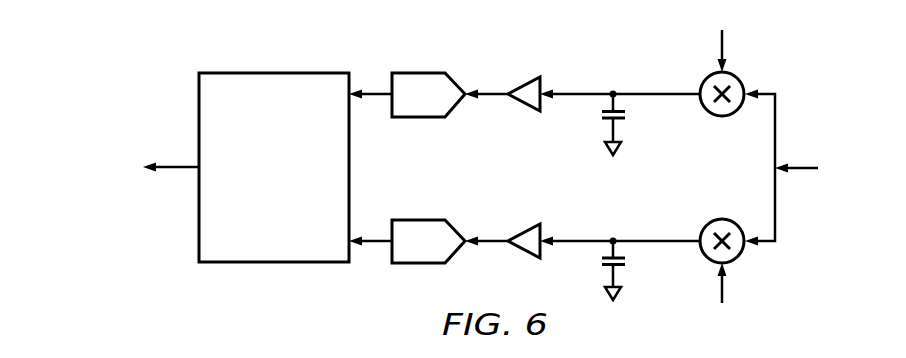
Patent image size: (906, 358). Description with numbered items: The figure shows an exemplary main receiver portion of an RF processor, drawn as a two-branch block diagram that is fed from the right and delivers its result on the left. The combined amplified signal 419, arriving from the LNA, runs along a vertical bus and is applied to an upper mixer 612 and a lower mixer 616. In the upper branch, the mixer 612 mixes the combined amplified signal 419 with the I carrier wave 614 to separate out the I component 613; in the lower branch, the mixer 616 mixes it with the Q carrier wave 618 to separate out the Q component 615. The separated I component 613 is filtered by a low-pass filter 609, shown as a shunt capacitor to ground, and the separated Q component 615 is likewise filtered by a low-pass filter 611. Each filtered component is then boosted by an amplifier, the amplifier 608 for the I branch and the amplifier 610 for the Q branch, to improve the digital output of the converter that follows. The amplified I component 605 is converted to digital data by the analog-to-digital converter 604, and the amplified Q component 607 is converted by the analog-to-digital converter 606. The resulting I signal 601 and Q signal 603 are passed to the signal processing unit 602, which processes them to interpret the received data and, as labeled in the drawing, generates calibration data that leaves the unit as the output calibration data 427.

The signal processing unit 602 is at (276, 72).
The output calibration data 427 is at (183, 170).
The I signal 601 is at (378, 92).
The Q signal 603 is at (378, 244).
The analog-to-digital converter 604 is at (423, 73).
The analog-to-digital converter 606 is at (420, 220).
The amplified I component 605 is at (487, 96).
The amplified Q component 607 is at (490, 238).
The amplifier 608 is at (520, 84).
The amplifier 610 is at (520, 250).
The I component 613 is at (580, 96).
The Q component 615 is at (580, 238).
The low-pass filter 609 is at (630, 115).
The low-pass filter 611 is at (630, 262).
The mixer 612 is at (706, 78).
The mixer 616 is at (706, 225).
The I carrier wave 614 is at (725, 57).
The Q carrier wave 618 is at (725, 278).
The combined amplified signal 419 is at (803, 162).